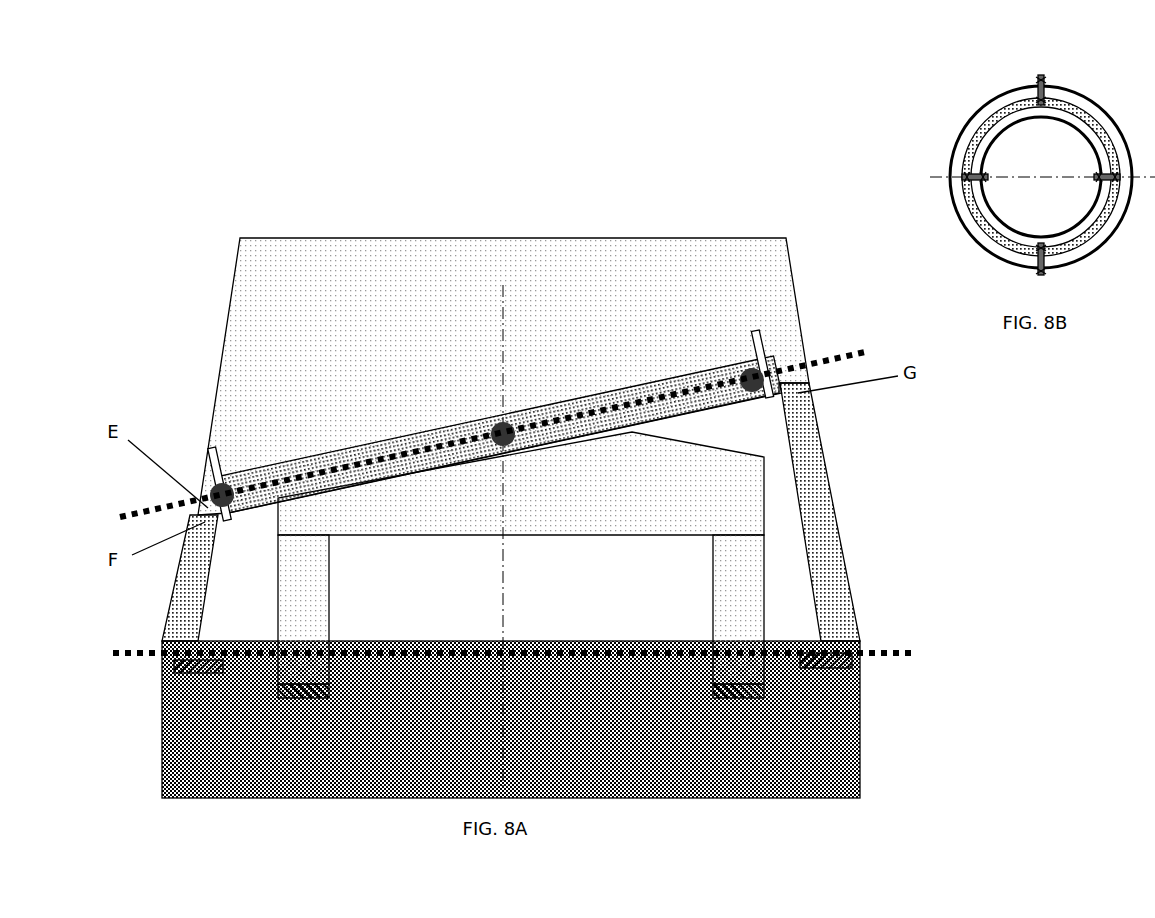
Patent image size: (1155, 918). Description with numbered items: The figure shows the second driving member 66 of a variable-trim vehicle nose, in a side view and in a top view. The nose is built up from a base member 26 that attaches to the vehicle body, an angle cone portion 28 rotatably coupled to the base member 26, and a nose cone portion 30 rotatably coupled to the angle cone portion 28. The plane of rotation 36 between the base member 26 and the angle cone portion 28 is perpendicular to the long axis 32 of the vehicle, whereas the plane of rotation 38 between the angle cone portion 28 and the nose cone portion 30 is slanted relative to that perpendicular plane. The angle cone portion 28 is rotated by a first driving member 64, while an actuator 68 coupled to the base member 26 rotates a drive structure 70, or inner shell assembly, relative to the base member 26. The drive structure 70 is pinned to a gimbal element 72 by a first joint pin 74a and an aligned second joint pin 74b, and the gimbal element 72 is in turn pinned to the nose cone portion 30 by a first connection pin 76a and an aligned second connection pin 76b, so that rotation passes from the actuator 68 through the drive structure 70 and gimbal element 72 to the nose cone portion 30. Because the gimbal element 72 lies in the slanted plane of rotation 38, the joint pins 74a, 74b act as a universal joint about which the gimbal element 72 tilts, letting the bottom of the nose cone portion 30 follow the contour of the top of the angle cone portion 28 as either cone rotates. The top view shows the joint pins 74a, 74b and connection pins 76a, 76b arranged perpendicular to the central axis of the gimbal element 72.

In FIG. 8A, the base member 26 is at (818, 773).
In FIG. 8A, the angle cone portion 28 is at (828, 553).
In FIG. 8A, the nose cone portion 30 is at (233, 355).
In FIG. 8B, the nose cone portion 30 is at (973, 108).
In FIG. 8A, the long axis 32 is at (503, 580).
In FIG. 8A, the plane of rotation 36 is at (135, 652).
In FIG. 8A, the plane of rotation 38 is at (120, 517).
In FIG. 8A, the first driving member 64 is at (180, 667).
In FIG. 8A, the second driving member 66 is at (790, 508).
In FIG. 8A, the actuator 68 is at (758, 690).
In FIG. 8A, the drive structure 70 is at (743, 578).
In FIG. 8B, the drive structure 70 is at (1018, 232).
In FIG. 8A, the gimbal element 72 is at (700, 403).
In FIG. 8B, the gimbal element 72 is at (985, 232).
In FIG. 8A, the first joint pin 74a is at (503, 433).
In FIG. 8B, the first joint pin 74a is at (978, 178).
In FIG. 8B, the second joint pin 74b is at (1102, 178).
In FIG. 8A, the first connection pin 76a is at (218, 497).
In FIG. 8B, the first connection pin 76a is at (1050, 92).
In FIG. 8A, the second connection pin 76b is at (757, 370).
In FIG. 8B, the second connection pin 76b is at (1048, 267).